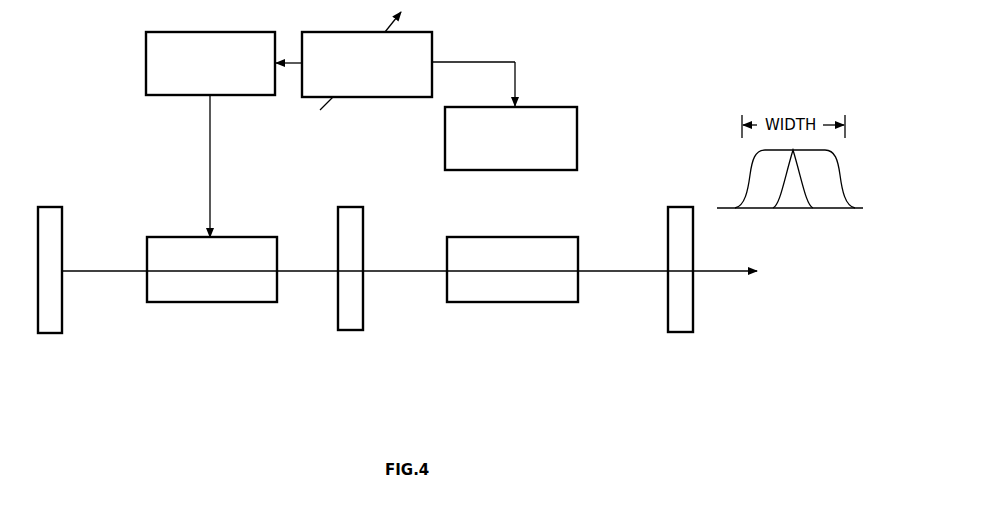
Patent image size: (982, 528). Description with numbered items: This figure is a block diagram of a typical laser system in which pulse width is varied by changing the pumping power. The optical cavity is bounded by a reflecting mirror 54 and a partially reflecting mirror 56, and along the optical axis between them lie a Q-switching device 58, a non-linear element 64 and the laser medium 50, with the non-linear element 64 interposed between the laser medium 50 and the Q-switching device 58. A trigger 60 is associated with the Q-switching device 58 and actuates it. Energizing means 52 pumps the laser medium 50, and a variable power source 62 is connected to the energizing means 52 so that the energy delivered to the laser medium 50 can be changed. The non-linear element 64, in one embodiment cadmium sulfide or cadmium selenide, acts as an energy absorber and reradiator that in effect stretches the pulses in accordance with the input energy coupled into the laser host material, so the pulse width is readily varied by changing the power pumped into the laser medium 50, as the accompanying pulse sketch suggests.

The laser medium 50 is at (463, 302).
The energizing means 52 is at (511, 138).
The reflecting mirror 54 is at (60, 284).
The partially reflecting mirror 56 is at (685, 283).
The Q-switching device 58 is at (215, 302).
The trigger 60 is at (210, 134).
The variable power source 62 is at (395, 61).
The non-linear element 64 is at (349, 293).